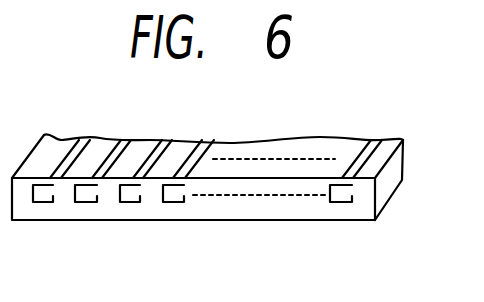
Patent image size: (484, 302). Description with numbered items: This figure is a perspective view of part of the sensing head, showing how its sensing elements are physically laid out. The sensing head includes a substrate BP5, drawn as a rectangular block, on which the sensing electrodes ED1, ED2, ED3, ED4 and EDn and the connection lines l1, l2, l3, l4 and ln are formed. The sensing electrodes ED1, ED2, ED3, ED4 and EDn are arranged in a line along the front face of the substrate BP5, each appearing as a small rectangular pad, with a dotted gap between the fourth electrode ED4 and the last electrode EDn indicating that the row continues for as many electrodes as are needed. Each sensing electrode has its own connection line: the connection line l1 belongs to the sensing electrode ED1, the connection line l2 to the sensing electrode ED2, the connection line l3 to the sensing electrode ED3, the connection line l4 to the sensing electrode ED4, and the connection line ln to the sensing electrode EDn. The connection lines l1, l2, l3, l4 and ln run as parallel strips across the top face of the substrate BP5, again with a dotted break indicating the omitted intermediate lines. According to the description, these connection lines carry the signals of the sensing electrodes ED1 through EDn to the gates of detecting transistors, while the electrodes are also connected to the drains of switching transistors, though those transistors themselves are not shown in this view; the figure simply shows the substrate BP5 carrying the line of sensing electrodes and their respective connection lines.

The connection line l1 is at (82, 139).
The connection line l2 is at (125, 140).
The connection line l3 is at (168, 140).
The connection line l4 is at (213, 140).
The connection line ln is at (370, 142).
The sensing electrode ED1 is at (48, 198).
The sensing electrode ED2 is at (92, 198).
The sensing electrode ED3 is at (135, 198).
The sensing electrode ED4 is at (180, 198).
The sensing electrode EDn is at (343, 198).
The substrate BP5 is at (404, 142).